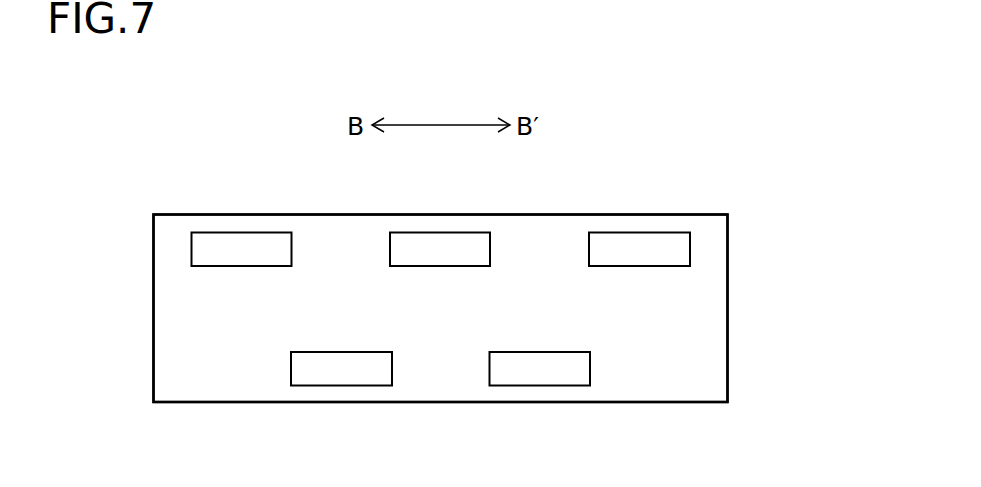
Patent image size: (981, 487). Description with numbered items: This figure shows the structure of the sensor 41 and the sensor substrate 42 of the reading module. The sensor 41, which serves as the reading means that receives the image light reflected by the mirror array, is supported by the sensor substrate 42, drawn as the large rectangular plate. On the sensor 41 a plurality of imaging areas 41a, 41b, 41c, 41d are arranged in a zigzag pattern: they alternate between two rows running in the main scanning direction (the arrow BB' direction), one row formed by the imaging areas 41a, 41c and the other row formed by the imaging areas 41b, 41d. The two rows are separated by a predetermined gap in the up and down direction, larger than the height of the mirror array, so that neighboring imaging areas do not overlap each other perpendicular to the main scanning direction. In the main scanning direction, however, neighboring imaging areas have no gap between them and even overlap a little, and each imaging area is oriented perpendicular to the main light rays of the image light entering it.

The sensor 41 is at (710, 254).
The sensor substrate 42 is at (706, 213).
The imaging area 41a is at (640, 248).
The imaging area 41b is at (539, 371).
The imaging area 41c is at (442, 248).
The imaging area 41d is at (340, 371).